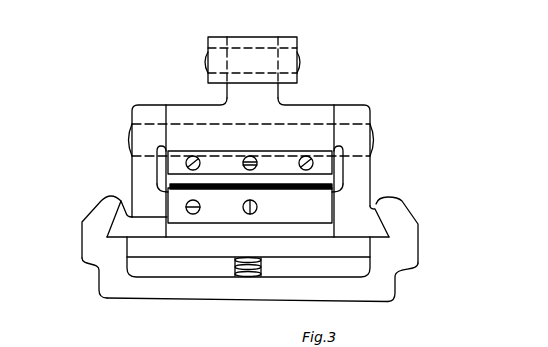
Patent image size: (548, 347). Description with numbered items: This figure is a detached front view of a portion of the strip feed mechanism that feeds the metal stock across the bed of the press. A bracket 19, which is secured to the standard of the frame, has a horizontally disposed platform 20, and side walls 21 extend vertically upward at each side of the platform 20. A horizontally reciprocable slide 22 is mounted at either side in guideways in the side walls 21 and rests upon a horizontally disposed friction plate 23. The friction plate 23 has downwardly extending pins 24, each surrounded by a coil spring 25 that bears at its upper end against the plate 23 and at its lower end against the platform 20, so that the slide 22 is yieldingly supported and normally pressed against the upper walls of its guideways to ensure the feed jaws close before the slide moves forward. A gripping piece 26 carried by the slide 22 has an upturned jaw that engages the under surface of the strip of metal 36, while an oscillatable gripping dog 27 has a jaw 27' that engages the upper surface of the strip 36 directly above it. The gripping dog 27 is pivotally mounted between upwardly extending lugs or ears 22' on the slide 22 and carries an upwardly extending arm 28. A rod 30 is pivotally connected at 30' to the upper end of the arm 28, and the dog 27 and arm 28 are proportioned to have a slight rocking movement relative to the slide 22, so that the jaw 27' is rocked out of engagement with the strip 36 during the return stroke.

The bracket 19 is at (83, 245).
The platform 20 is at (214, 291).
The side walls 21 is at (95, 224).
The slide 22 is at (263, 167).
The lugs or ears 22' is at (258, 126).
The friction plate 23 is at (358, 248).
The pins 24 is at (264, 273).
The coil spring 25 is at (233, 262).
The gripping piece 26 is at (117, 213).
The gripping dog 27 is at (257, 128).
The jaw 27' is at (221, 169).
The arm 28 is at (243, 98).
The rod 30 is at (236, 57).
The pivotal connection 30' is at (269, 62).
The strip of metal 36 is at (272, 198).